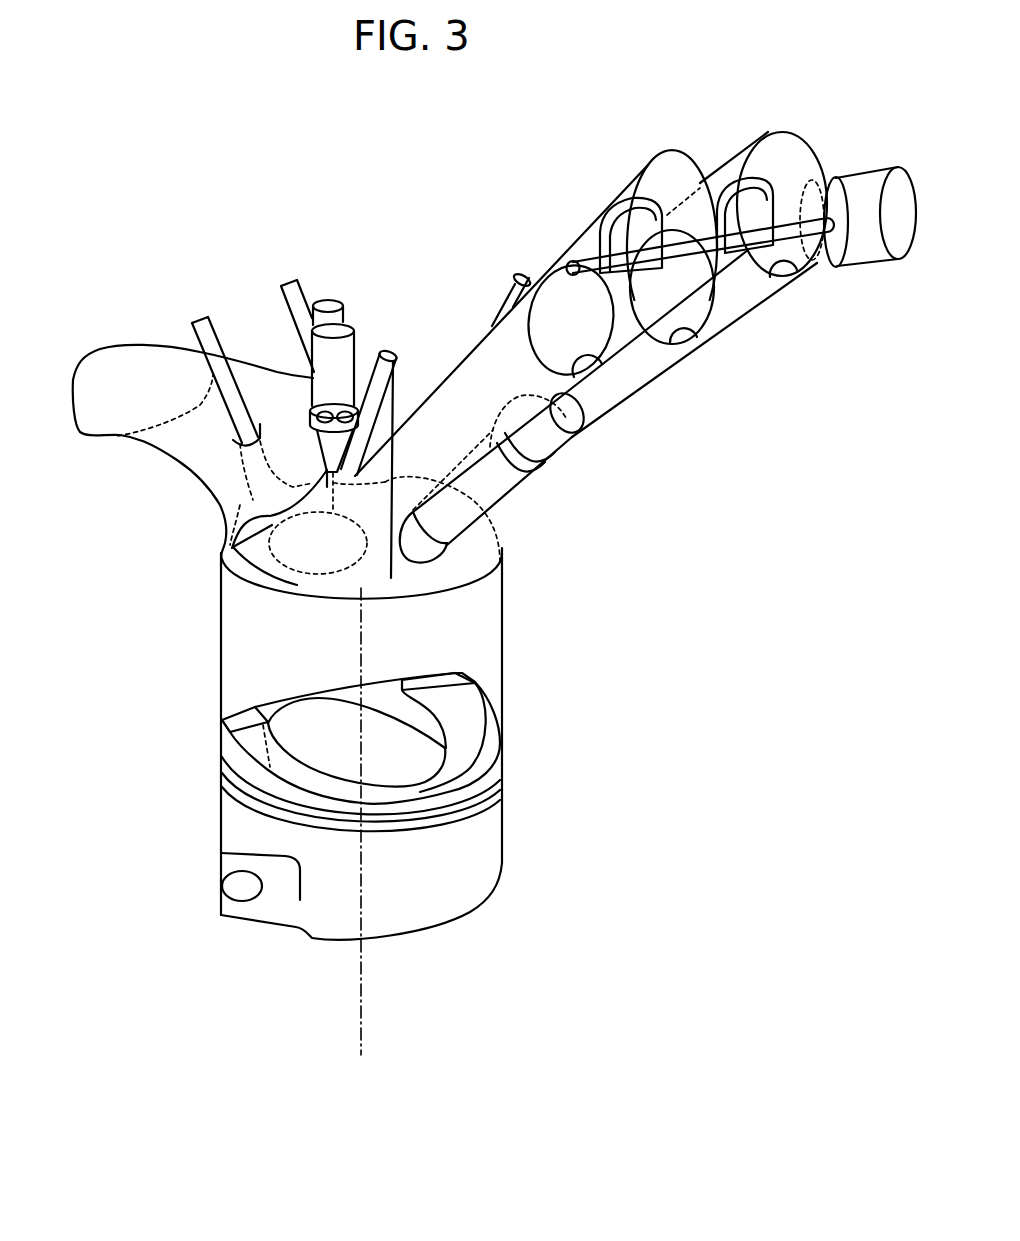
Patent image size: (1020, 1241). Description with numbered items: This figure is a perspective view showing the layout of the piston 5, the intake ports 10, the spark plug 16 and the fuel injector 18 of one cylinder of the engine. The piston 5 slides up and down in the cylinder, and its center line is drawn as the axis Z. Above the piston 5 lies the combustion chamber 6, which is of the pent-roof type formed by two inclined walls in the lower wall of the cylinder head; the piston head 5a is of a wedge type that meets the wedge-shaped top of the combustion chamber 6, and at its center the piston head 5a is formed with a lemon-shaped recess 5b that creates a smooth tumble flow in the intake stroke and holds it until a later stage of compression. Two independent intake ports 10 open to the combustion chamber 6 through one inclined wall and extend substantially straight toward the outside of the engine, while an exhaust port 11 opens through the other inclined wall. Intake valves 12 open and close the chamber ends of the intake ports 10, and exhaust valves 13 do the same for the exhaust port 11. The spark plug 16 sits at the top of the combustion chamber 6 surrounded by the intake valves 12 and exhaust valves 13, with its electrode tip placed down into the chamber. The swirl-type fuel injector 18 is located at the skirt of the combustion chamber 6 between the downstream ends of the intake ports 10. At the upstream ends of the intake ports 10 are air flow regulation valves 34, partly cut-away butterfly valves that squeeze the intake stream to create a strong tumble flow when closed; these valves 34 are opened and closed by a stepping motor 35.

The piston 5 is at (503, 862).
The piston head 5a is at (389, 683).
The lemon-shaped recess 5b is at (303, 720).
The combustion chamber 6 is at (468, 621).
The intake port 10 is at (696, 338).
The exhaust port 11 is at (266, 371).
The intake valve 12 is at (513, 283).
The exhaust valve 13 is at (212, 320).
The spark plug 16 is at (345, 303).
The fuel injector 18 is at (520, 493).
The air flow regulation valve 34 is at (612, 205).
The stepping motor 35 is at (851, 177).
The cylinder axis Z is at (363, 990).